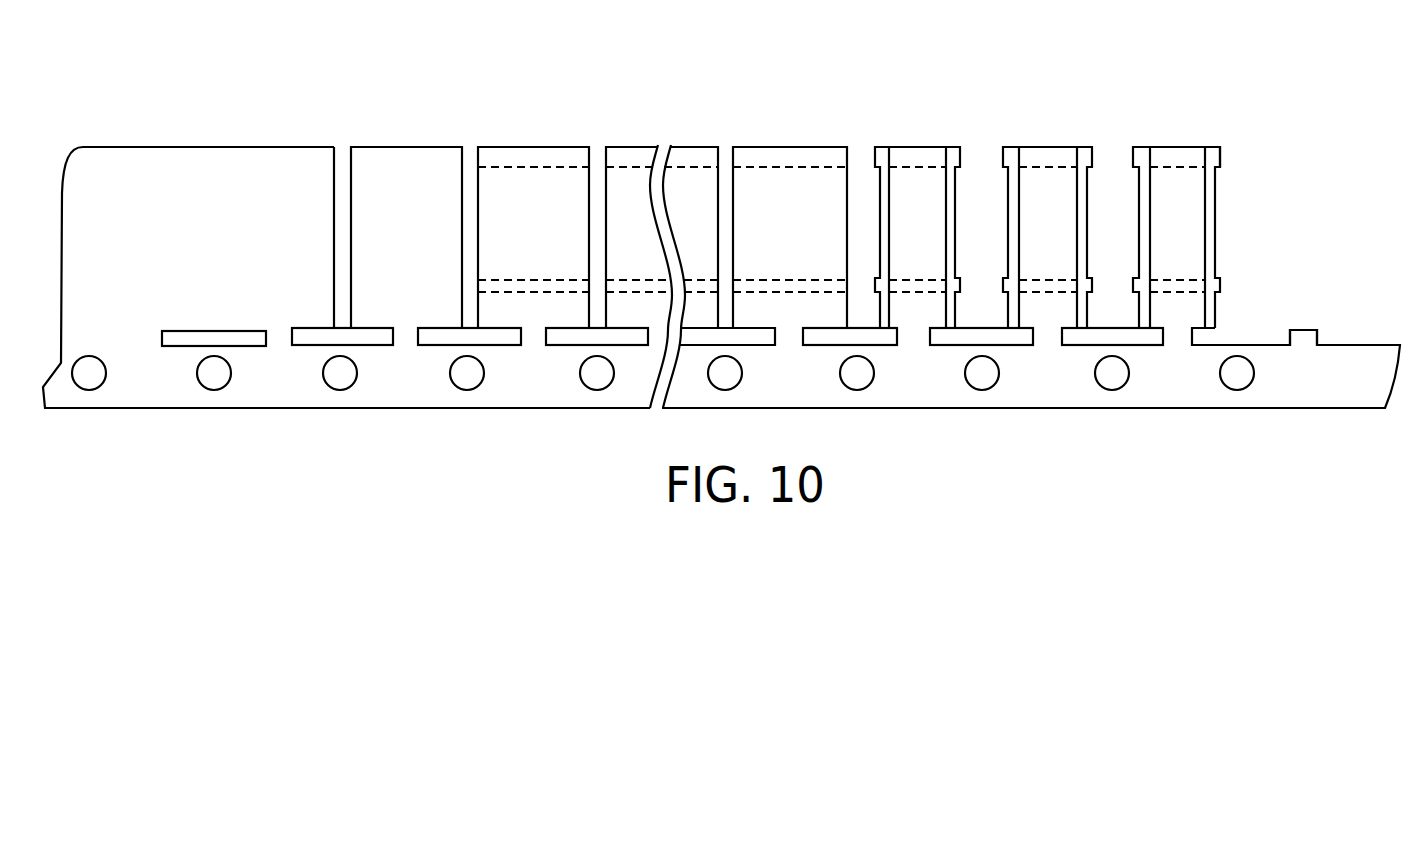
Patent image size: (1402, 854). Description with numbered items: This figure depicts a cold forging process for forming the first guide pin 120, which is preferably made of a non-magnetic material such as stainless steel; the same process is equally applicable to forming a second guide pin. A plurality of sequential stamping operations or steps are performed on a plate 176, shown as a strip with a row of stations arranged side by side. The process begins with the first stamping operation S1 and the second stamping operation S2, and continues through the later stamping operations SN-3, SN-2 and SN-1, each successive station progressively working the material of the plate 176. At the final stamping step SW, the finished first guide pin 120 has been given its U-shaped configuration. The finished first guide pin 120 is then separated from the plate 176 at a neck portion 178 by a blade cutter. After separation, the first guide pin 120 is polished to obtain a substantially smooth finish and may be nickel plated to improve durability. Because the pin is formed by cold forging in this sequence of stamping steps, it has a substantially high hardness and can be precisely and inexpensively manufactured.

The plate 176 is at (165, 185).
The first stamping operation S1 is at (407, 180).
The second stamping operation S2 is at (533, 168).
The stamping operation N-3 SN-3 is at (787, 172).
The stamping operation N-2 SN-2 is at (917, 173).
The stamping operation N-1 SN-1 is at (1050, 173).
The final stamping operation SW is at (1182, 172).
The first guide pin 120 is at (1218, 150).
The neck portion 178 is at (1182, 335).